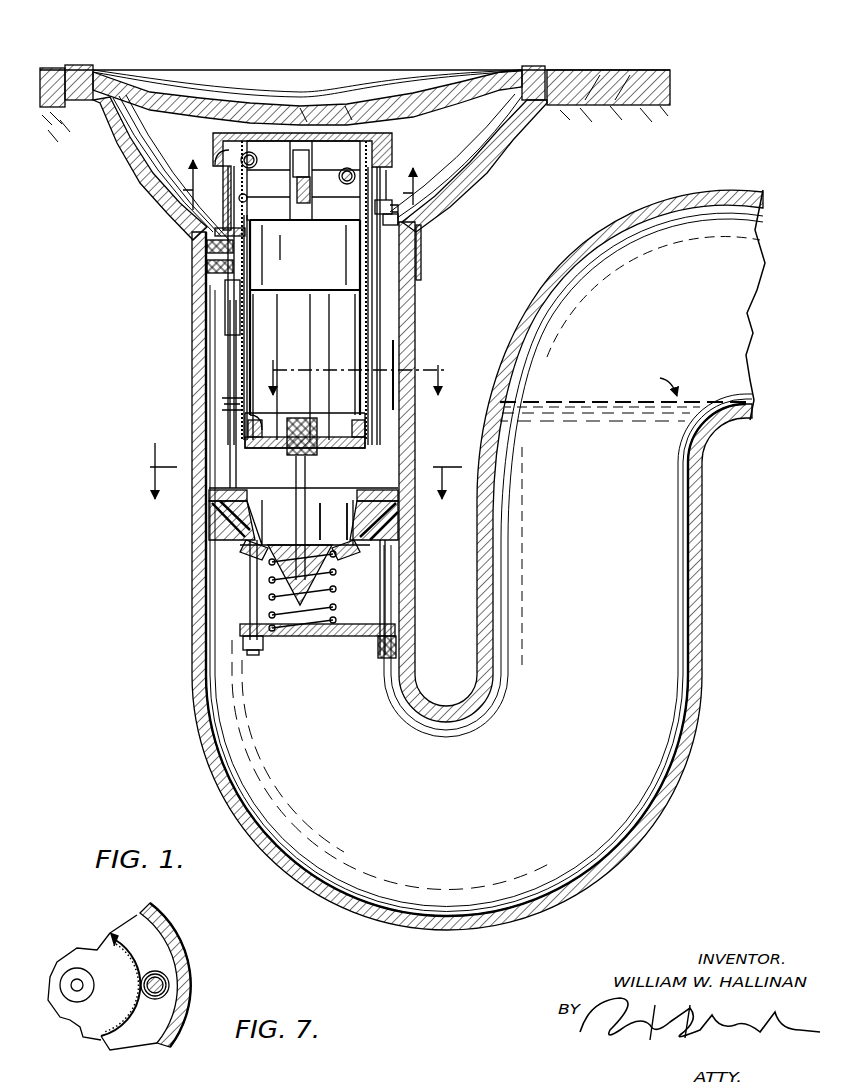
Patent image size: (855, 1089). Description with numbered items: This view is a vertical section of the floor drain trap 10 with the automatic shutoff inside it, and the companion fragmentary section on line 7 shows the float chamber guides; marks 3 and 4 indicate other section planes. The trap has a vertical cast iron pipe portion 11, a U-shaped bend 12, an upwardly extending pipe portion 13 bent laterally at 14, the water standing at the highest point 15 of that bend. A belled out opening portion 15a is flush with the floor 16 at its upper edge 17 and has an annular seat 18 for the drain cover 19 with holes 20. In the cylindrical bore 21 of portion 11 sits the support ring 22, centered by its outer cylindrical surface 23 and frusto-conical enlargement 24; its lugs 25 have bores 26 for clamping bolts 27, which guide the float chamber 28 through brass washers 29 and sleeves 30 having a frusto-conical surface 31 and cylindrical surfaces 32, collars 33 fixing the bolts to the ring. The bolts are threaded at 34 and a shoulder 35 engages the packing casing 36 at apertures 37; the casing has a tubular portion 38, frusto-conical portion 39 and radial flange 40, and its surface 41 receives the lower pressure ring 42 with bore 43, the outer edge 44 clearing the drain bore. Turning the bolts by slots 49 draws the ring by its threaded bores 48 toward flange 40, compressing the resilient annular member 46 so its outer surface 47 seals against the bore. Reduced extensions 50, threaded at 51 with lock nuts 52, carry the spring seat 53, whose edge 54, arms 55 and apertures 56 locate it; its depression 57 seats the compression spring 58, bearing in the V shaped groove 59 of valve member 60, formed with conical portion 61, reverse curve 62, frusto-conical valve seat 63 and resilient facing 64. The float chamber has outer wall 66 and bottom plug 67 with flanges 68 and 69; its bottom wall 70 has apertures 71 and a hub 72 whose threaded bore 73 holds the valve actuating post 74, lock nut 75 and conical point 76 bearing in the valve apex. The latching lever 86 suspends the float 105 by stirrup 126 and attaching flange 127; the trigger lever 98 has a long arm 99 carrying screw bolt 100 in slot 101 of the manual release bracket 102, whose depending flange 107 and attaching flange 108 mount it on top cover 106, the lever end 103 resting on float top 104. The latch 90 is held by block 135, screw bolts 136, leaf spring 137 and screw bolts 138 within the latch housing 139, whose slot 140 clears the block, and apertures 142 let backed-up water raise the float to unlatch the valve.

In FIG. 1, the section line 3- 3 is at (301, 471).
In FIG. 1, the section line 4- 4 is at (303, 185).
In FIG. 1, the section line 7- 7 is at (356, 376).
In FIG. 1, the floor drain trap 10 is at (418, 310).
In FIG. 1, the vertical cast iron pipe portion 11 is at (200, 378).
In FIG. 7, the vertical cast iron pipe portion 11 is at (174, 940).
In FIG. 1, the U-shaped bend 12 is at (456, 928).
In FIG. 1, the upwardly extending pipe portion 13 is at (703, 552).
In FIG. 1, the lateral bend 14 is at (732, 195).
In FIG. 1, the highest point 15 is at (730, 402).
In FIG. 1, the belled out opening portion 15a is at (482, 170).
In FIG. 1, the floor 16 is at (590, 68).
In FIG. 1, the upper edge 17 is at (533, 70).
In FIG. 1, the annular seat 18 is at (500, 75).
In FIG. 1, the drain cover 19 is at (322, 112).
In FIG. 1, the holes 20 is at (390, 100).
In FIG. 1, the cylindrical bore 21 is at (222, 408).
In FIG. 1, the support ring 22 is at (422, 256).
In FIG. 1, the outer cylindrical surface 23 is at (422, 245).
In FIG. 1, the frusto-conical enlargement 24 is at (448, 240).
In FIG. 1, the lugs 25 is at (370, 237).
In FIG. 1, the vertical through bore 26 is at (462, 225).
In FIG. 1, the clamping bolts 27 is at (378, 343).
In FIG. 7, the clamping bolts 27 is at (155, 971).
In FIG. 1, the float chamber 28 is at (368, 187).
In FIG. 7, the float chamber 28 is at (110, 947).
In FIG. 1, the brass washers 29 is at (400, 212).
In FIG. 1, the short sleeves 30 is at (403, 348).
In FIG. 7, the short sleeves 30 is at (152, 1012).
In FIG. 1, the frusto-conical surface 31 is at (398, 370).
In FIG. 7, the frusto-conical surface 31 is at (128, 1004).
In FIG. 1, the cylindrical surfaces 32 is at (400, 402).
In FIG. 1, the sleeves or collars 33 is at (418, 280).
In FIG. 1, the threaded portion 34 is at (400, 510).
In FIG. 1, the annular shoulder 35 is at (352, 498).
In FIG. 1, the packing casing 36 is at (232, 487).
In FIG. 1, the apertures 37 is at (398, 494).
In FIG. 1, the tubular portion 38 is at (264, 515).
In FIG. 1, the frusto-conical portion 39 is at (268, 496).
In FIG. 1, the radial flange 40 is at (212, 486).
In FIG. 1, the outer cylindrical surface 41 is at (210, 528).
In FIG. 1, the lower pressure ring 42 is at (250, 520).
In FIG. 1, the circular bore 43 is at (240, 545).
In FIG. 1, the outer edge 44 is at (210, 494).
In FIG. 1, the resilient annular member 46 is at (208, 510).
In FIG. 1, the outer cylindrical surface 47 is at (404, 520).
In FIG. 1, the threaded bores 48 is at (386, 550).
In FIG. 1, the slots 49 is at (396, 185).
In FIG. 1, the reduced cylindrical extension 50 is at (386, 595).
In FIG. 1, the threaded end 51 is at (380, 658).
In FIG. 1, the lock nuts 52 is at (378, 645).
In FIG. 1, the spring seat 53 is at (312, 638).
In FIG. 1, the edge 54 is at (250, 628).
In FIG. 1, the radially extending arms 55 is at (362, 624).
In FIG. 1, the apertures 56 is at (386, 620).
In FIG. 1, the cylindrical depression 57 is at (300, 600).
In FIG. 1, the helical compression spring 58 is at (268, 605).
In FIG. 1, the V shaped annular groove 59 is at (338, 558).
In FIG. 1, the valve member 60 is at (288, 572).
In FIG. 1, the conical central portion 61 is at (262, 652).
In FIG. 1, the reverse curve 62 is at (262, 535).
In FIG. 1, the frusto-conical portion 63 is at (252, 560).
In FIG. 1, the valve facing 64 is at (385, 566).
In FIG. 1, the cylindrical outer wall 66 is at (247, 360).
In FIG. 1, the flat bottom wall 67 is at (338, 432).
In FIG. 1, the annular flange 68 is at (262, 419).
In FIG. 1, the annular flange 69 is at (368, 436).
In FIG. 1, the bottom wall 70 is at (252, 446).
In FIG. 1, the apertures 71 is at (345, 446).
In FIG. 1, the central hub 72 is at (316, 426).
In FIG. 1, the threaded bore 73 is at (300, 420).
In FIG. 1, the valve actuating post 74 is at (307, 474).
In FIG. 1, the lock nut 75 is at (318, 448).
In FIG. 1, the conical point 76 is at (322, 540).
In FIG. 1, the latching lever 86 is at (272, 165).
In FIG. 1, the latch 90 is at (240, 200).
In FIG. 1, the trigger lever 98 is at (344, 184).
In FIG. 1, the long arm 99 is at (288, 215).
In FIG. 1, the screw bolt 100 is at (296, 188).
In FIG. 1, the slot 101 is at (305, 210).
In FIG. 1, the manual release bracket 102 is at (295, 145).
In FIG. 1, the end 103 is at (270, 220).
In FIG. 1, the top 104 is at (284, 218).
In FIG. 1, the float 105 is at (310, 292).
In FIG. 1, the top cover 106 is at (395, 140).
In FIG. 1, the depending flange 107 is at (312, 205).
In FIG. 1, the attaching flange 108 is at (303, 140).
In FIG. 1, the stirrup 126 is at (278, 160).
In FIG. 1, the attaching flange 127 is at (314, 215).
In FIG. 1, the metal block 135 is at (214, 283).
In FIG. 1, the screw bolts 136 is at (207, 267).
In FIG. 1, the leaf spring 137 is at (206, 243).
In FIG. 1, the screw bolts 138 is at (237, 214).
In FIG. 1, the latch housing 139 is at (228, 172).
In FIG. 1, the slot 140 is at (232, 306).
In FIG. 1, the apertures 142 is at (250, 420).